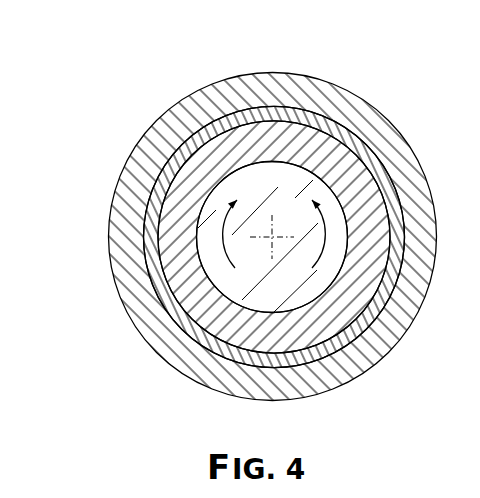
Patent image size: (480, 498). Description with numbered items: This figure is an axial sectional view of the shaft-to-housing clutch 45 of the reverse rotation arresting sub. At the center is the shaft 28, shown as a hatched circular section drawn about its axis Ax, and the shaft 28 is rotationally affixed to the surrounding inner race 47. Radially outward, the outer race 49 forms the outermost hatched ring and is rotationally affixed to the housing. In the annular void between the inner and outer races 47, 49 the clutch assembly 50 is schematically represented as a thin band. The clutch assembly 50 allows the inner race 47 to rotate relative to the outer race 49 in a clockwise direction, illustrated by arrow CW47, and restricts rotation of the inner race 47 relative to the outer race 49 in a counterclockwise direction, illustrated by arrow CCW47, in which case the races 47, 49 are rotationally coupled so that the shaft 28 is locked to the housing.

The shaft-to-housing clutch 45 is at (172, 78).
The outer race 49 is at (128, 158).
The clutch assembly 50 is at (267, 104).
The inner race 47 is at (210, 177).
The shaft 28 is at (233, 288).
The axis Ax is at (279, 227).
The arrow CW47 is at (223, 250).
The arrow CCW47 is at (312, 286).